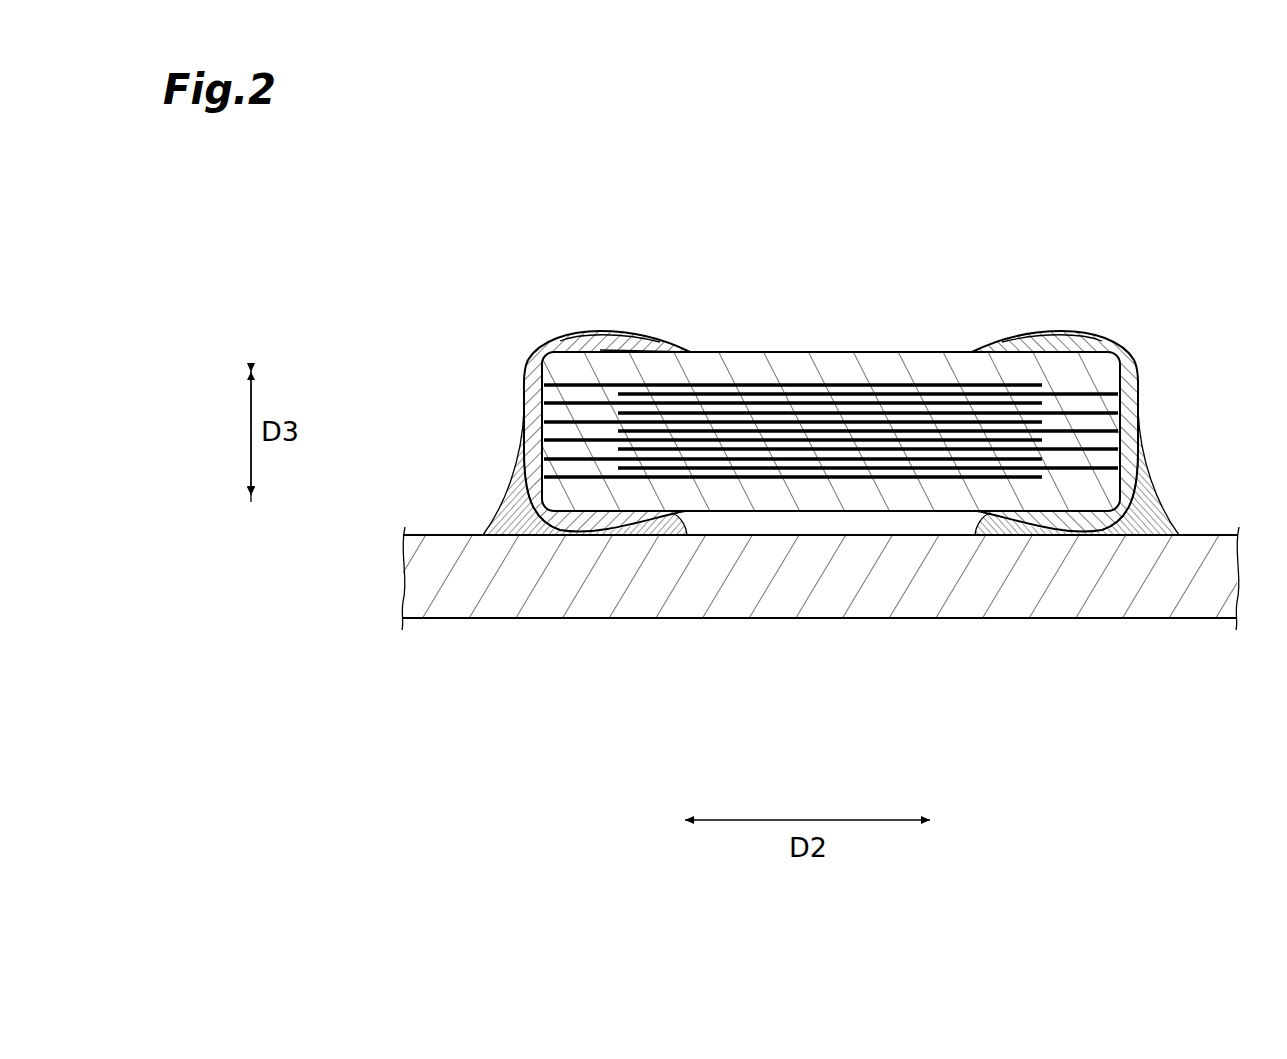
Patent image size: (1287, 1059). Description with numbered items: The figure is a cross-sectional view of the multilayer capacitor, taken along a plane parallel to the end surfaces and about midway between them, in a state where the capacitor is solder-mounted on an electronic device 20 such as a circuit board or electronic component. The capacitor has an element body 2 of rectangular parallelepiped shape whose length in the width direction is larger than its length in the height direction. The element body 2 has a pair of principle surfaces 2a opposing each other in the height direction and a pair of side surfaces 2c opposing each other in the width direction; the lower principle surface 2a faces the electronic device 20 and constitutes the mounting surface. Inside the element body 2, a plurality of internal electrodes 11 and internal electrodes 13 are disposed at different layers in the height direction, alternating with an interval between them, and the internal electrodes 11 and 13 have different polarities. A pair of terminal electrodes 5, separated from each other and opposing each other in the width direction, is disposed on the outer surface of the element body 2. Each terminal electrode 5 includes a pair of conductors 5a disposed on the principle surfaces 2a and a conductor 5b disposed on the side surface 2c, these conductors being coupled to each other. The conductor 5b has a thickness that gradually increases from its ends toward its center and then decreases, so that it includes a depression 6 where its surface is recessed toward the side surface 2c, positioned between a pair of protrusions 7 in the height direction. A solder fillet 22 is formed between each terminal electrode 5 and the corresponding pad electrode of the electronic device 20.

The element body 2 is at (866, 348).
The principle surface 2a is at (760, 352).
The side surface 2c is at (524, 372).
The terminal electrode 5 is at (551, 334).
The conductor 5a is at (590, 332).
The conductor 5b is at (510, 487).
The depression 6 is at (526, 433).
The protrusion 7 is at (517, 360).
The internal electrode 11 is at (1005, 500).
The internal electrode 13 is at (588, 344).
The electronic device 20 is at (759, 588).
The solder fillet 22 is at (524, 537).